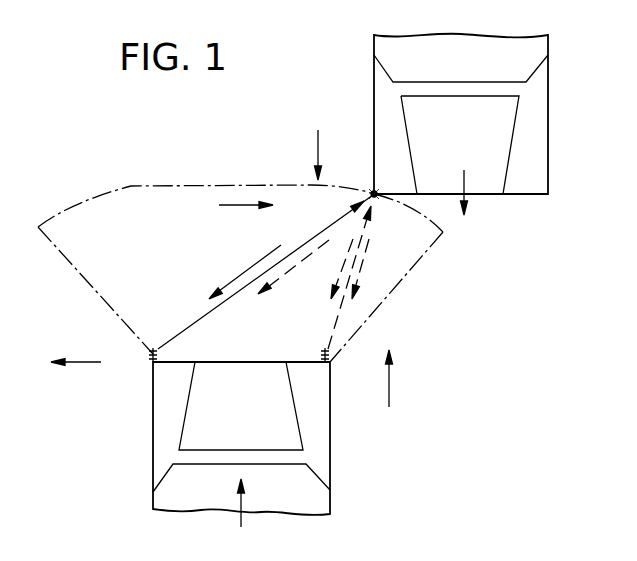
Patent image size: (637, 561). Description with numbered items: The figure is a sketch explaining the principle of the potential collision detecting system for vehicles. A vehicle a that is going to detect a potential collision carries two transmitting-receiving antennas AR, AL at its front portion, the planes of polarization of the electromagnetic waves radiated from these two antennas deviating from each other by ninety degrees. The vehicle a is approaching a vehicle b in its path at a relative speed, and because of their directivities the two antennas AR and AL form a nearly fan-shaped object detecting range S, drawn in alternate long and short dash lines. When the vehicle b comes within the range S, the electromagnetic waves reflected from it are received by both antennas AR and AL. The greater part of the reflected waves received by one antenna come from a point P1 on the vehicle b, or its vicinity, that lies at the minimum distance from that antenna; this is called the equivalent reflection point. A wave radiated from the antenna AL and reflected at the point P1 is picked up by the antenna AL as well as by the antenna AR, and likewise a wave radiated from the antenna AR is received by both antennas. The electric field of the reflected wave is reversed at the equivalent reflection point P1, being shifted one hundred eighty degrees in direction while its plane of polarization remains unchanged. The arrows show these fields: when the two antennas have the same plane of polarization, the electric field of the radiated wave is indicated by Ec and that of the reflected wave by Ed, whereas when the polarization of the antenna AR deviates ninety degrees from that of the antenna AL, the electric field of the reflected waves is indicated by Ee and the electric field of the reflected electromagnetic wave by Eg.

The object detecting range S is at (128, 184).
The equivalent reflection point P1 is at (387, 209).
The transmitting-receiving antenna AL is at (160, 337).
The transmitting-receiving antenna AR is at (323, 349).
The vehicle a is at (250, 421).
The vehicle b is at (466, 71).
The electric field of reflected electromagnetic wave Eg is at (333, 147).
The electric field of reflected electromagnetic wave Ed is at (246, 221).
The electric field of radiated electromagnetic wave Ec is at (78, 378).
The electric field of reflected electromagnetic wave Ee is at (405, 380).